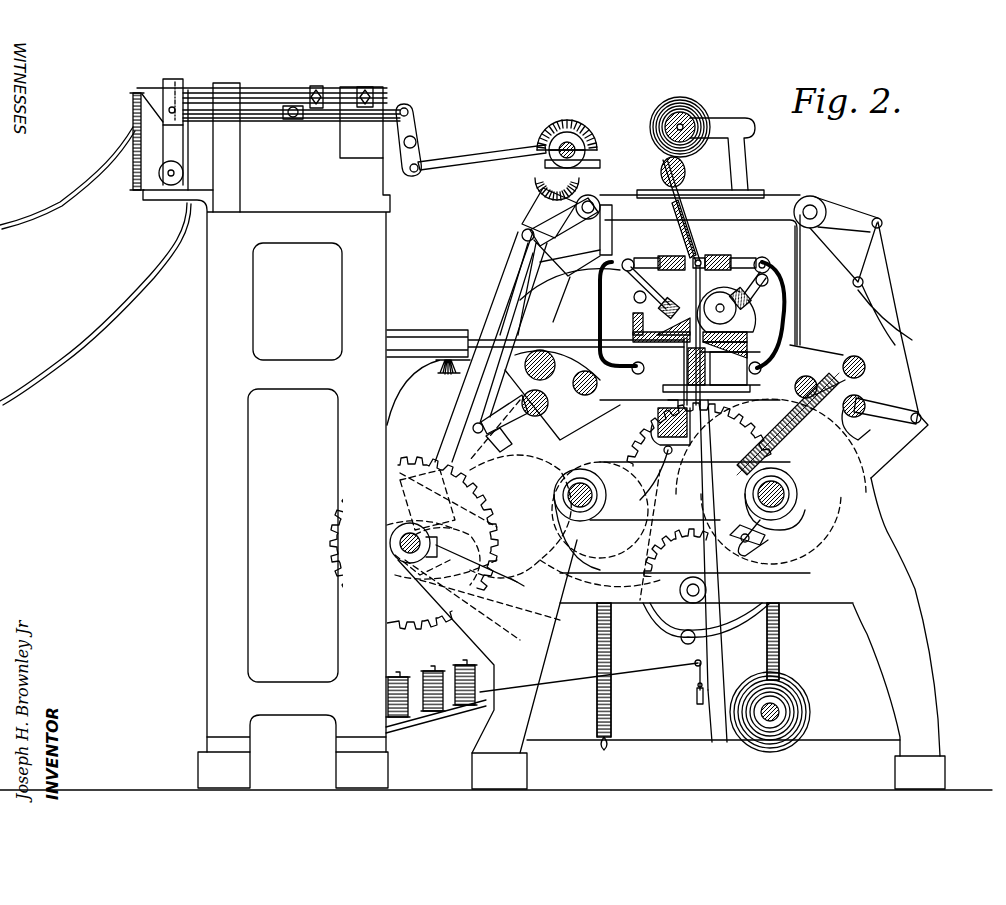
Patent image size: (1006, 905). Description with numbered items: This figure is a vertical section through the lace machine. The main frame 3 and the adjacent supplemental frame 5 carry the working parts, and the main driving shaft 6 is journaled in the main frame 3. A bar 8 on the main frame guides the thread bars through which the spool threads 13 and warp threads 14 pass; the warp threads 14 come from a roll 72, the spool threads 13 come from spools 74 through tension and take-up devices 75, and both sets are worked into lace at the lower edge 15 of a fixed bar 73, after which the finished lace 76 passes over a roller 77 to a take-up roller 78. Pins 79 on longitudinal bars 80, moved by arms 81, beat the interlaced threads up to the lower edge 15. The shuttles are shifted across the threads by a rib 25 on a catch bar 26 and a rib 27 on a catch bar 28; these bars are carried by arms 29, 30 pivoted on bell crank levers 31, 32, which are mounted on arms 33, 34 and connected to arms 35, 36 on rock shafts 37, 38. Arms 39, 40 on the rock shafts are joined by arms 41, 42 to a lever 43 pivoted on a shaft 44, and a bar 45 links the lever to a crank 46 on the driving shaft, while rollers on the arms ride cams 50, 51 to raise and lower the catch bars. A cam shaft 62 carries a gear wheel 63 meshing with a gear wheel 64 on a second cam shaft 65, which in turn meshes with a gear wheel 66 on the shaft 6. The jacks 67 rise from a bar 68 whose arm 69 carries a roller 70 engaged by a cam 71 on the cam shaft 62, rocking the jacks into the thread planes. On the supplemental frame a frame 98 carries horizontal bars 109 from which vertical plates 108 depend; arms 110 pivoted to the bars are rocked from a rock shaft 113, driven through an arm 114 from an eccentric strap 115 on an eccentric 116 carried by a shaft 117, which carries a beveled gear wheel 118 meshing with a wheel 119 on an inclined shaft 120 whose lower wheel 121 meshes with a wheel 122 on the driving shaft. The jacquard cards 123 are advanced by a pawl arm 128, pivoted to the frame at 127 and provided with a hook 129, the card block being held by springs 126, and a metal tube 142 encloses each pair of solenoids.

The main frame 3 is at (880, 629).
The supplemental frame 5 is at (206, 523).
The main driving shaft 6 is at (400, 540).
The bar 8 is at (707, 362).
The spool threads 13 is at (690, 566).
The warp threads 14 is at (720, 690).
The lower edge 15 is at (701, 256).
The rib or tooth 25 is at (640, 331).
The catch bar 26 is at (670, 302).
The rib or tooth 27 is at (765, 340).
The catch bar 28 is at (740, 292).
The arm 29 is at (658, 290).
The arm 30 is at (763, 261).
The bell crank lever 31 is at (576, 292).
The bell crank lever 32 is at (906, 330).
The arm 33 is at (548, 212).
The arm 34 is at (850, 216).
The arm 35 is at (478, 380).
The arm 36 is at (866, 369).
The rock shaft 37 is at (545, 412).
The rock shaft 38 is at (862, 416).
The arm 39 is at (514, 436).
The arm 40 is at (920, 426).
The arm 41 is at (660, 613).
The arm 42 is at (756, 616).
The lever 43 is at (682, 640).
The shaft 44 is at (680, 590).
The bar 45 is at (504, 590).
The crank 46 is at (401, 565).
The cam 50 is at (636, 312).
The cam 51 is at (780, 298).
The cam shaft 62 is at (792, 465).
The gear wheel 63 is at (740, 460).
The gear wheel 64 is at (510, 477).
The cam shaft 65 is at (580, 480).
The gear wheel 66 is at (333, 530).
The jacks 67 is at (683, 377).
The bar 68 is at (655, 425).
The arm 69 is at (680, 470).
The roller 70 is at (748, 542).
The cam 71 is at (798, 489).
The roll 72 is at (811, 708).
The fixed bar 73 is at (690, 240).
The spools 74 is at (455, 690).
The tension and take-up devices 75 is at (697, 700).
The finished lace 76 is at (656, 205).
The roller 77 is at (686, 177).
The take-up roller 78 is at (666, 100).
The pins 79 is at (696, 270).
The longitudinal bars 80 is at (720, 256).
The arms 81 is at (580, 266).
The frame 98 is at (241, 168).
The vertical plates 108 is at (168, 168).
The horizontal bars 109 is at (262, 116).
The arms 110 is at (338, 122).
The rock shaft 113 is at (417, 141).
The arm 114 is at (463, 166).
The eccentric strap 115 is at (566, 122).
The eccentric 116 is at (577, 134).
The shaft 117 is at (549, 133).
The beveled gear wheel 118 is at (540, 151).
The beveled gear wheel 119 is at (536, 181).
The inclined shaft 120 is at (494, 318).
The beveled gear wheel 121 is at (415, 457).
The beveled gear wheel 122 is at (498, 545).
The jacquard cards 123 is at (96, 370).
The spring 126 is at (132, 127).
The pivotal connection 127 is at (371, 87).
The pawl arm 128 is at (322, 86).
The hook 129 is at (164, 80).
The metal tube 142 is at (448, 366).